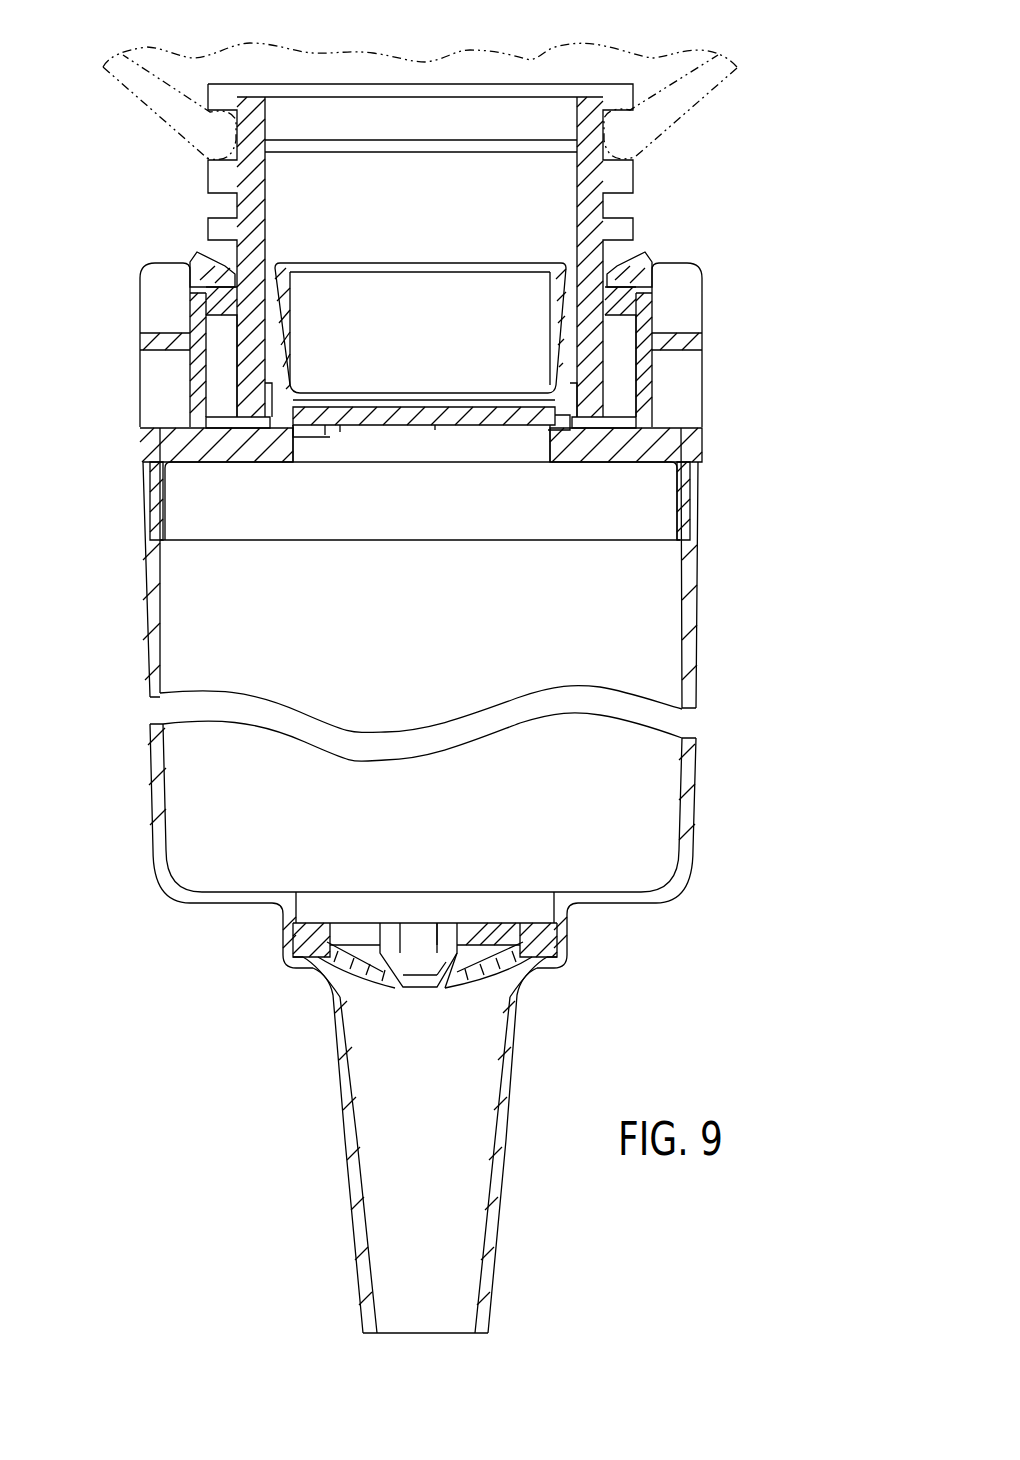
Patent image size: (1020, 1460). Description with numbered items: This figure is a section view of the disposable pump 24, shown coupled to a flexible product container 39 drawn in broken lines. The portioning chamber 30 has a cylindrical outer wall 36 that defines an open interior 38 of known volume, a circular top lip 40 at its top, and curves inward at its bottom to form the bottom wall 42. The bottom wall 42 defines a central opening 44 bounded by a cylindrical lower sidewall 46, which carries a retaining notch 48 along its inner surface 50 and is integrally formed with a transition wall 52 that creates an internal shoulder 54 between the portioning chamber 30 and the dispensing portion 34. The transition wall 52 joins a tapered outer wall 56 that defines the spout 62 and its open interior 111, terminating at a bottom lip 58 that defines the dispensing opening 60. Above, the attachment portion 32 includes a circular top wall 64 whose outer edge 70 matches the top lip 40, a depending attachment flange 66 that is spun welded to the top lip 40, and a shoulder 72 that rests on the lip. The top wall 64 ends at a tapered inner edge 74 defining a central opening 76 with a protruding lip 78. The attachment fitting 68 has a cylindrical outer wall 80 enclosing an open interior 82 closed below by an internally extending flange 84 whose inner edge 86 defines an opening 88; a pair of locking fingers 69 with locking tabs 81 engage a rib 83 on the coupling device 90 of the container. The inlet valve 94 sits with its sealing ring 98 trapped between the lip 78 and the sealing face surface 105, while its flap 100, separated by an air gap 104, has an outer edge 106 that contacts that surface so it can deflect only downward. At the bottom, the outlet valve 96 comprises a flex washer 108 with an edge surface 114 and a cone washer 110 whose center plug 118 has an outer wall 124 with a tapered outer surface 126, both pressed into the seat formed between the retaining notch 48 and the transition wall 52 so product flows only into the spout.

The coupling device 90 is at (545, 84).
The flexible product container 39 is at (132, 118).
The attachment portion 32 is at (307, 248).
The attachment fitting 68 is at (578, 300).
The locking tab 81 is at (635, 250).
The locking fingers 69 is at (650, 312).
The rib 83 is at (610, 303).
The top wall 64 is at (162, 438).
The outer wall 80 is at (282, 312).
The open interior 82 is at (518, 310).
The internally extending flange 84 is at (333, 398).
The opening 88 is at (445, 400).
The inlet valve 94 is at (416, 388).
The inner edge 86 is at (475, 397).
The sealing face surface 105 is at (308, 435).
The outer edge 70 is at (148, 443).
The disposable pump 24 is at (738, 433).
The shoulder 72 is at (140, 452).
The attachment flange 66 is at (162, 512).
The top lip 40 is at (700, 472).
The inner edge 74 is at (290, 462).
The sealing ring 98 is at (308, 428).
The air gap 104 is at (330, 428).
The outer edge 106 is at (340, 428).
The flap 100 is at (435, 425).
The central opening 76 is at (480, 443).
The protruding lip 78 is at (548, 430).
The portioning chamber 30 is at (728, 586).
The open interior 38 is at (579, 616).
The outer wall 36 is at (690, 778).
The bottom wall 42 is at (230, 892).
The outlet valve 96 is at (345, 903).
The inner surface 50 is at (553, 890).
The retaining notch 48 is at (305, 922).
The central opening 44 is at (426, 920).
The outer wall 124 is at (487, 920).
The cone washer 110 is at (505, 925).
The edge surface 114 is at (387, 985).
The center plug 118 is at (418, 1003).
The tapered outer surface 126 is at (445, 987).
The flex washer 108 is at (488, 963).
The transition wall 52 is at (290, 968).
The lower sidewall 46 is at (565, 957).
The tapered outer wall 56 is at (340, 1094).
The dispensing portion 34 is at (530, 1078).
The internal shoulder 54 is at (525, 965).
The open interior 111 is at (438, 1143).
The spout 62 is at (325, 1187).
The bottom lip 58 is at (367, 1335).
The dispensing opening 60 is at (403, 1332).